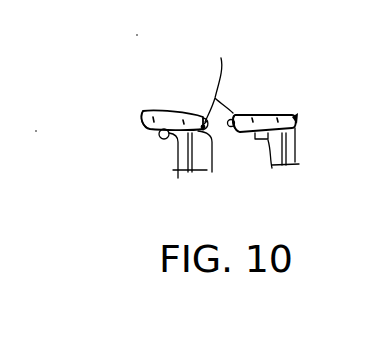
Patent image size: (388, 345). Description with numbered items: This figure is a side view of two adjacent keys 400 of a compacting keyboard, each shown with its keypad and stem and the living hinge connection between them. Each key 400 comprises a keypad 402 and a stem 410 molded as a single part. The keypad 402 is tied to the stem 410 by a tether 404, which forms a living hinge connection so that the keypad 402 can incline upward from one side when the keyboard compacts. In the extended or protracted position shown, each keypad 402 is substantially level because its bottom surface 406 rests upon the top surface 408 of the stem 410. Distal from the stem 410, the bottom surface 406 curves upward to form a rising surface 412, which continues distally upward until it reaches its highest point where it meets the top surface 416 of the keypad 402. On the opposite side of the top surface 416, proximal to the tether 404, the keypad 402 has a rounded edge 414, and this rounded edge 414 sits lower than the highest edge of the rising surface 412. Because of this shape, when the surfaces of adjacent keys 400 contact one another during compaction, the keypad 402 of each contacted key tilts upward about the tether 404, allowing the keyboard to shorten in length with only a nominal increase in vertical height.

The key 400 is at (180, 108).
The keypad 402 is at (148, 104).
The tether 404 is at (195, 170).
The bottom surface 406 is at (160, 140).
The top surface 408 is at (163, 141).
The stem 410 is at (188, 180).
The rising surface 412 is at (144, 118).
The rounded edge 414 is at (212, 81).
The top surface 416 is at (170, 112).